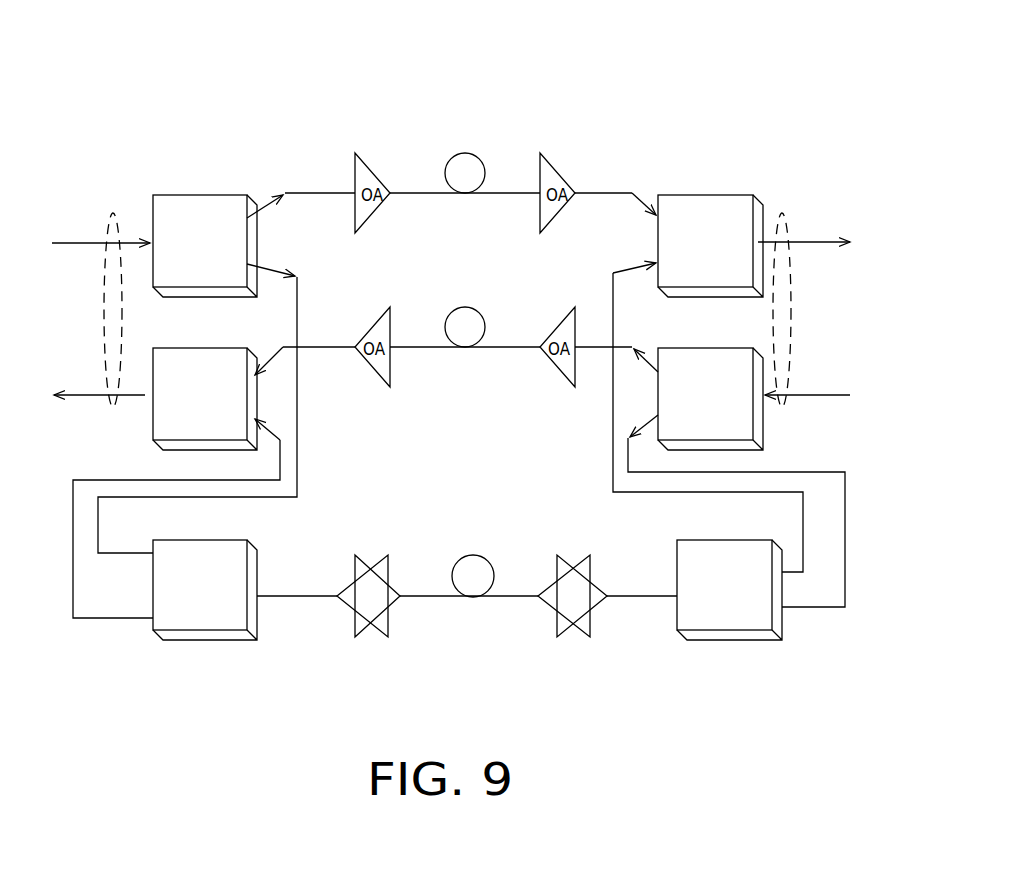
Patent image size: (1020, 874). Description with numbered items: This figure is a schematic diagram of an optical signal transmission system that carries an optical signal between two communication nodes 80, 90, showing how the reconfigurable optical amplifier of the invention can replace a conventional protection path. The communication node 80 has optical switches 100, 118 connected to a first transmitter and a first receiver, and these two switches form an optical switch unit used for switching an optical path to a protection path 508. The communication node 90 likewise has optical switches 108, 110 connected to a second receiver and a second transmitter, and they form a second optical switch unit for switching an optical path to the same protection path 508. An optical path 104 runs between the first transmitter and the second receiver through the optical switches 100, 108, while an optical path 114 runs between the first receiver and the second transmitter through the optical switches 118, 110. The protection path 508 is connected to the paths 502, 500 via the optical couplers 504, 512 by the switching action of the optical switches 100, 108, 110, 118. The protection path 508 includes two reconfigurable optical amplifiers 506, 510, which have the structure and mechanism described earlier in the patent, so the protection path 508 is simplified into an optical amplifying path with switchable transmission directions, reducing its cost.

The communication node 80 is at (168, 115).
The communication node 90 is at (753, 115).
The optical switch 100 is at (230, 203).
The optical path 104 is at (465, 165).
The optical switch 108 is at (690, 203).
The optical switch 110 is at (713, 348).
The optical path 114 is at (467, 316).
The optical switch 118 is at (210, 348).
The path 500 is at (297, 430).
The path 502 is at (127, 478).
The optical coupler 504 is at (207, 642).
The reconfigurable optical amplifier 506 is at (388, 637).
The protection path 508 is at (477, 547).
The reconfigurable optical amplifier 510 is at (590, 637).
The optical coupler 512 is at (733, 642).